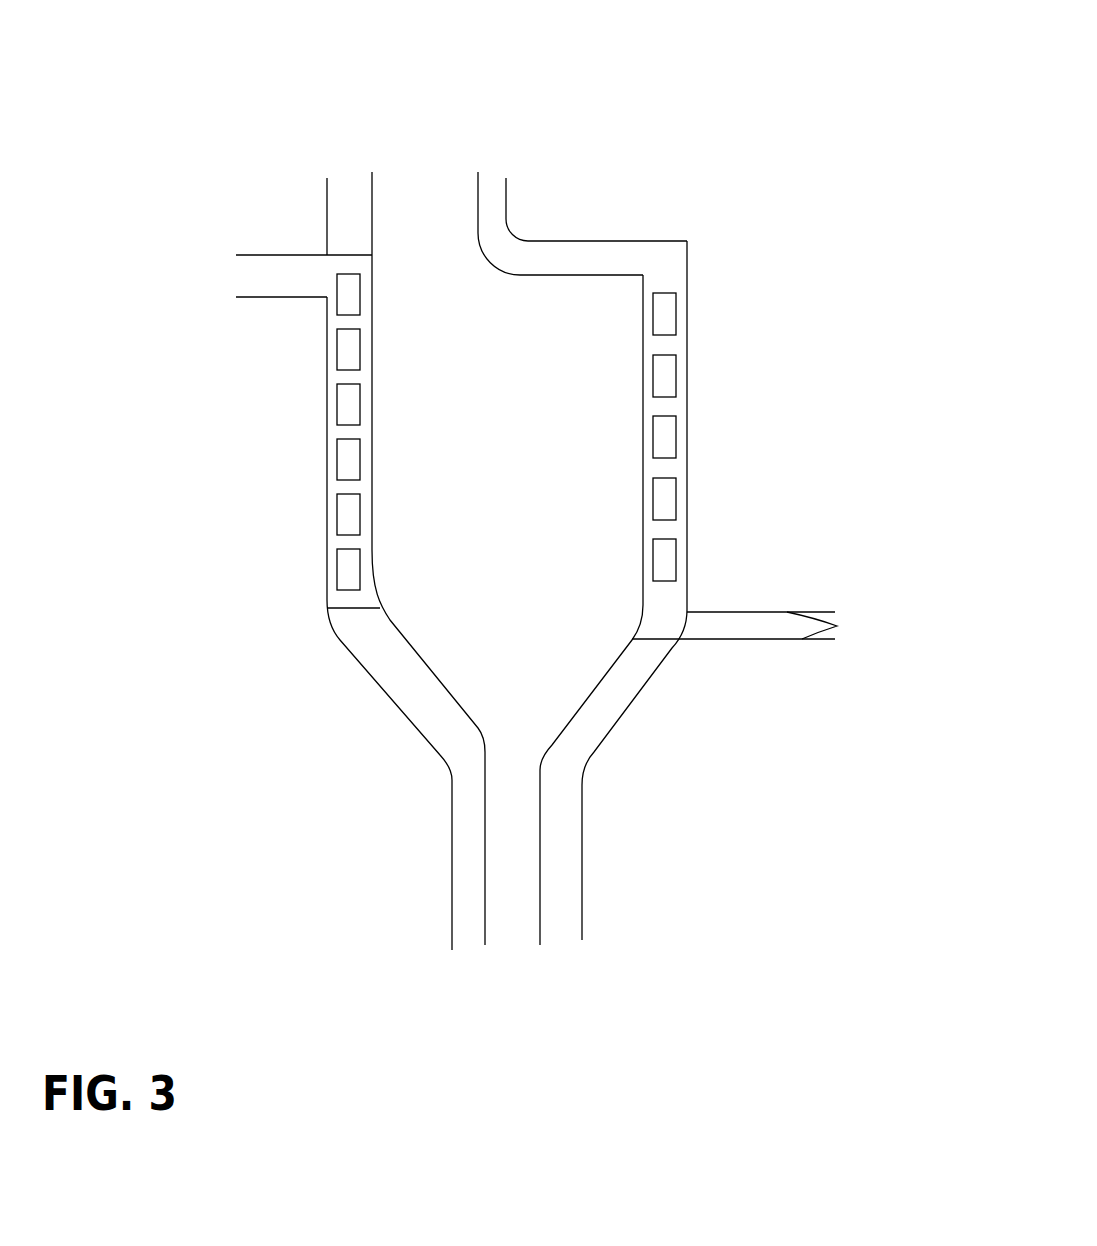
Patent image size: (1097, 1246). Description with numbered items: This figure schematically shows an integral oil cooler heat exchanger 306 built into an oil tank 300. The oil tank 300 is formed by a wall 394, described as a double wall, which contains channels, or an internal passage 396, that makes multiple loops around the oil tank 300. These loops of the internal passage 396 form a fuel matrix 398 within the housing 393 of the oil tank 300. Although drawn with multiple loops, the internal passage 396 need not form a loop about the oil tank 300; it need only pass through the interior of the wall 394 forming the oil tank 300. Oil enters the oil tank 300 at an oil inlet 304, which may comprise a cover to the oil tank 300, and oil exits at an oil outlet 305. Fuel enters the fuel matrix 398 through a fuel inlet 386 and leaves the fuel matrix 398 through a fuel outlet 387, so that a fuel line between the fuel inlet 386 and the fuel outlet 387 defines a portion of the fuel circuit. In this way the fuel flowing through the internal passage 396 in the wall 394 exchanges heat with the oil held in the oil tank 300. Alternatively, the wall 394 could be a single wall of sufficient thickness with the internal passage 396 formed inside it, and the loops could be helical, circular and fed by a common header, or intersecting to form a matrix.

The oil tank 300 is at (258, 458).
The oil inlet 304 is at (435, 227).
The oil outlet 305 is at (514, 875).
The integral oil cooler heat exchanger 306 is at (786, 33).
The fuel inlet 386 is at (295, 275).
The fuel outlet 387 is at (834, 627).
The housing 393 is at (691, 308).
The wall 394 is at (443, 818).
The internal passage 396 is at (619, 681).
The fuel matrix 398 is at (665, 494).